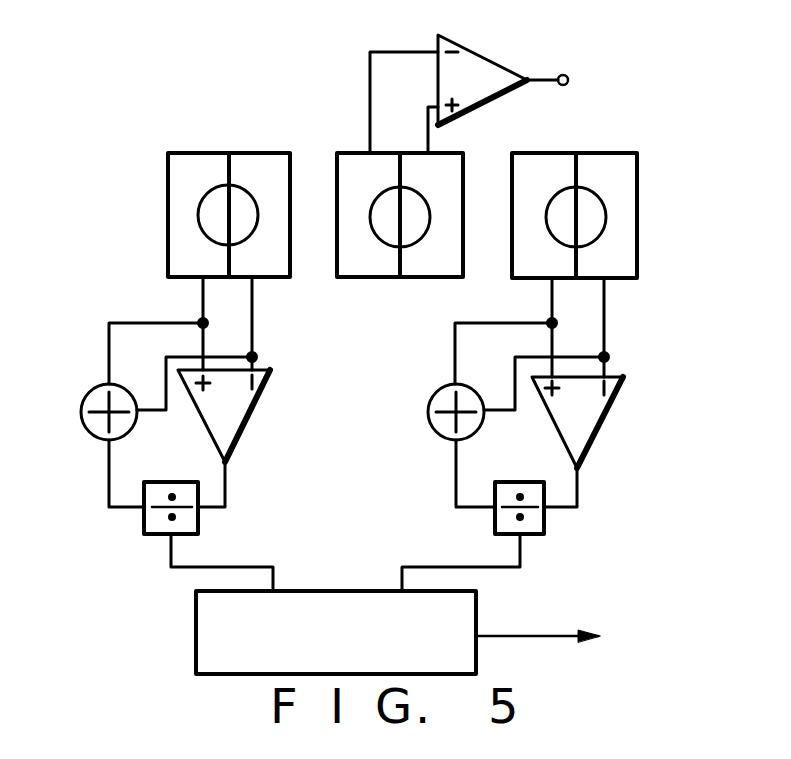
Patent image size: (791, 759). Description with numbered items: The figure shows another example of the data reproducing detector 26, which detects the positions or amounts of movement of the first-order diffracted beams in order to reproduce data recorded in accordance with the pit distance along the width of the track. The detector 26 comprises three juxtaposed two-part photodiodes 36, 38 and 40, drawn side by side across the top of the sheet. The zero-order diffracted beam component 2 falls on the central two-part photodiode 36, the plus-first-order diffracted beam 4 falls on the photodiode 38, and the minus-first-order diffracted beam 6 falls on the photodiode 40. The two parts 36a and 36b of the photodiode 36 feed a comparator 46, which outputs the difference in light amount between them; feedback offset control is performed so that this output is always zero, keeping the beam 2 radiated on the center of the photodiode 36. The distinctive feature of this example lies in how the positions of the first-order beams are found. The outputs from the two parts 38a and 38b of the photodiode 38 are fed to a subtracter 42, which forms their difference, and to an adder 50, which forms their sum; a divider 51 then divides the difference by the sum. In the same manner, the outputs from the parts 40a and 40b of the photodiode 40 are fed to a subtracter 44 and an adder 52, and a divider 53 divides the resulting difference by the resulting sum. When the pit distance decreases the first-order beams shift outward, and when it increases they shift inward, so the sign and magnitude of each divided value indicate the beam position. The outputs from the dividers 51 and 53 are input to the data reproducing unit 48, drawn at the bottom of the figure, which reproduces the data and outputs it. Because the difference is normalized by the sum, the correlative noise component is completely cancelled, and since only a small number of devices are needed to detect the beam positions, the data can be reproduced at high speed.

The data reproducing detector 26 is at (293, 102).
The two-part photodiode 38 is at (203, 151).
The part of photodiode 38a is at (223, 271).
The part of photodiode 38b is at (285, 271).
The +1st-order diffracted beam 4 is at (245, 207).
The two-part photodiode 36 is at (376, 279).
The part of photodiode 36a is at (393, 183).
The part of photodiode 36b is at (458, 183).
The 0-order diffracted beam component 2 is at (419, 228).
The two-part photodiode 40 is at (639, 218).
The part of photodiode 40a is at (569, 269).
The part of photodiode 40b is at (632, 269).
The −1st-order diffracted beam 6 is at (598, 203).
The comparator 46 is at (489, 66).
The adder 50 is at (81, 412).
The subtracter 42 is at (246, 404).
The divider 51 is at (198, 526).
The adder 52 is at (430, 412).
The subtracter 44 is at (598, 405).
The divider 53 is at (544, 522).
The data reproducing unit 48 is at (211, 645).